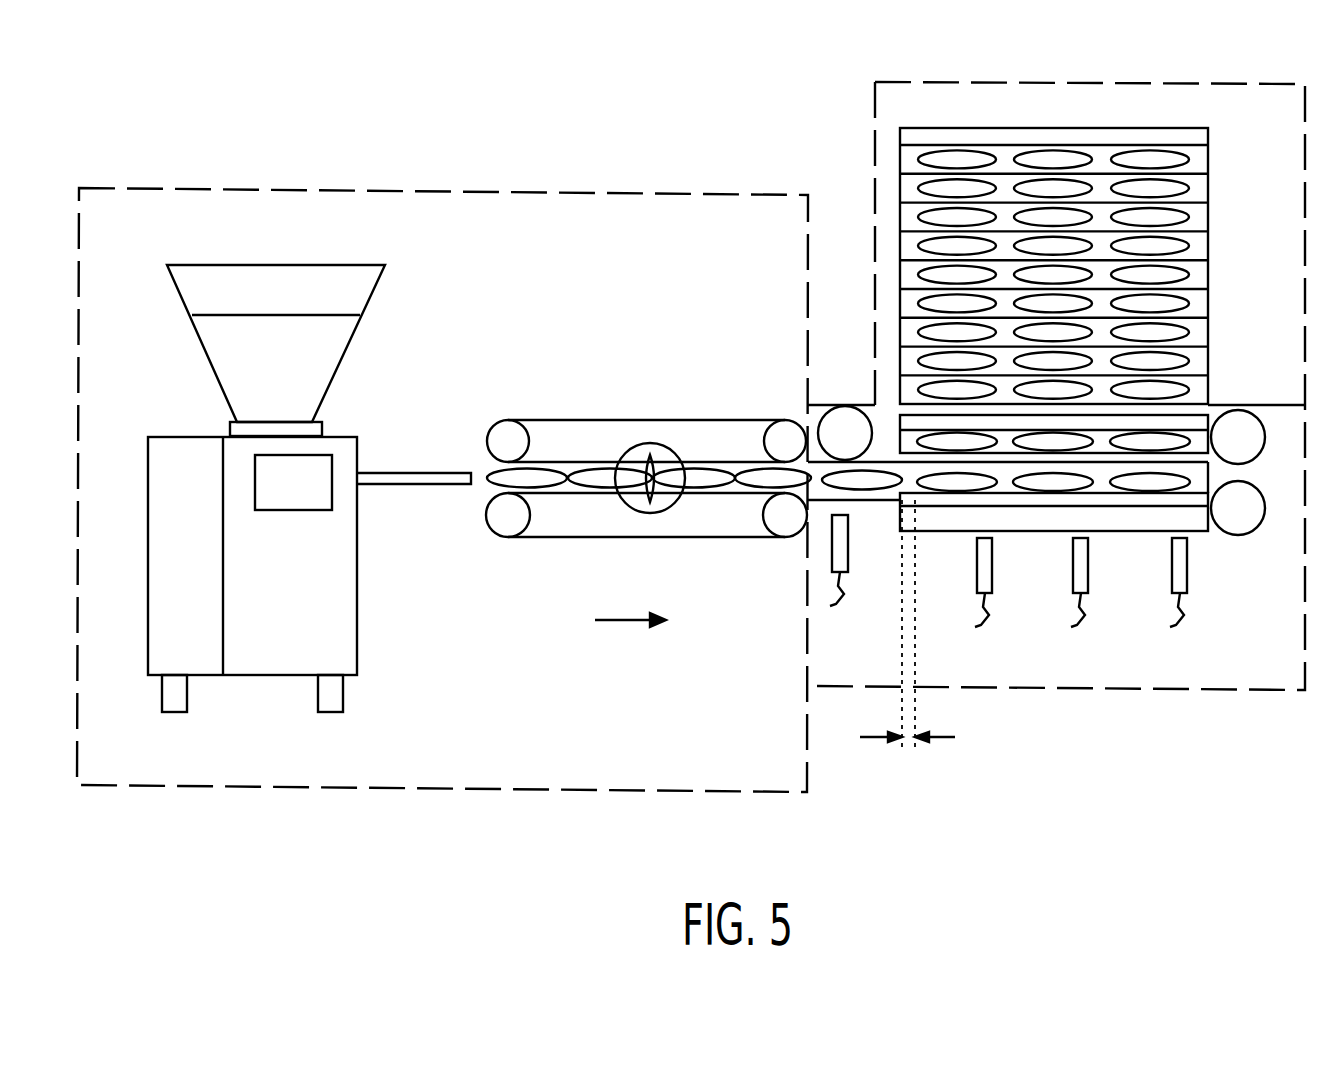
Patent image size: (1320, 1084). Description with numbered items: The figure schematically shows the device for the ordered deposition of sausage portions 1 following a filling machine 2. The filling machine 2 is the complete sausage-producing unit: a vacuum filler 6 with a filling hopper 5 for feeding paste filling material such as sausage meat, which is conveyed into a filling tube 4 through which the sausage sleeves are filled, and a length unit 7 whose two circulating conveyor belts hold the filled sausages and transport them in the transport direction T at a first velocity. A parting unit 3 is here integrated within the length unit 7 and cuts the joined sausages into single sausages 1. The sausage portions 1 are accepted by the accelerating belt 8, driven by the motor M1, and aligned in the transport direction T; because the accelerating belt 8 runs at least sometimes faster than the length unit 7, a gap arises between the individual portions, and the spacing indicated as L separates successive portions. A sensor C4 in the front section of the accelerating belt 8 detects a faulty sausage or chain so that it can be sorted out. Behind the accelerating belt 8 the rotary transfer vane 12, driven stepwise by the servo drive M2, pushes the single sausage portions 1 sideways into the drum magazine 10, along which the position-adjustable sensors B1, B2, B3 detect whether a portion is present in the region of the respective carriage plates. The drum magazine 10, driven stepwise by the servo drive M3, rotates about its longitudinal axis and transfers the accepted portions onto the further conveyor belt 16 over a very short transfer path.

The sausage portions 1 is at (712, 497).
The filling machine 2 is at (103, 243).
The parting unit 3 is at (654, 447).
The filling tube 4 is at (420, 487).
The filling hopper 5 is at (358, 291).
The vacuum filler 6 is at (340, 630).
The length unit 7 is at (612, 538).
The accelerating belt 8 is at (806, 463).
The drum magazine 10 is at (1078, 413).
The rotary transfer vane 12 is at (1043, 524).
The conveyor belt 16 is at (1209, 238).
The motor M1 is at (845, 433).
The servo drive M2 is at (1238, 508).
The servo drive M3 is at (1238, 437).
The sensor B1 is at (1196, 582).
The sensor B2 is at (1099, 582).
The sensor B3 is at (1002, 582).
The sensor C4 is at (856, 560).
The length L is at (907, 646).
The transport direction T is at (630, 638).